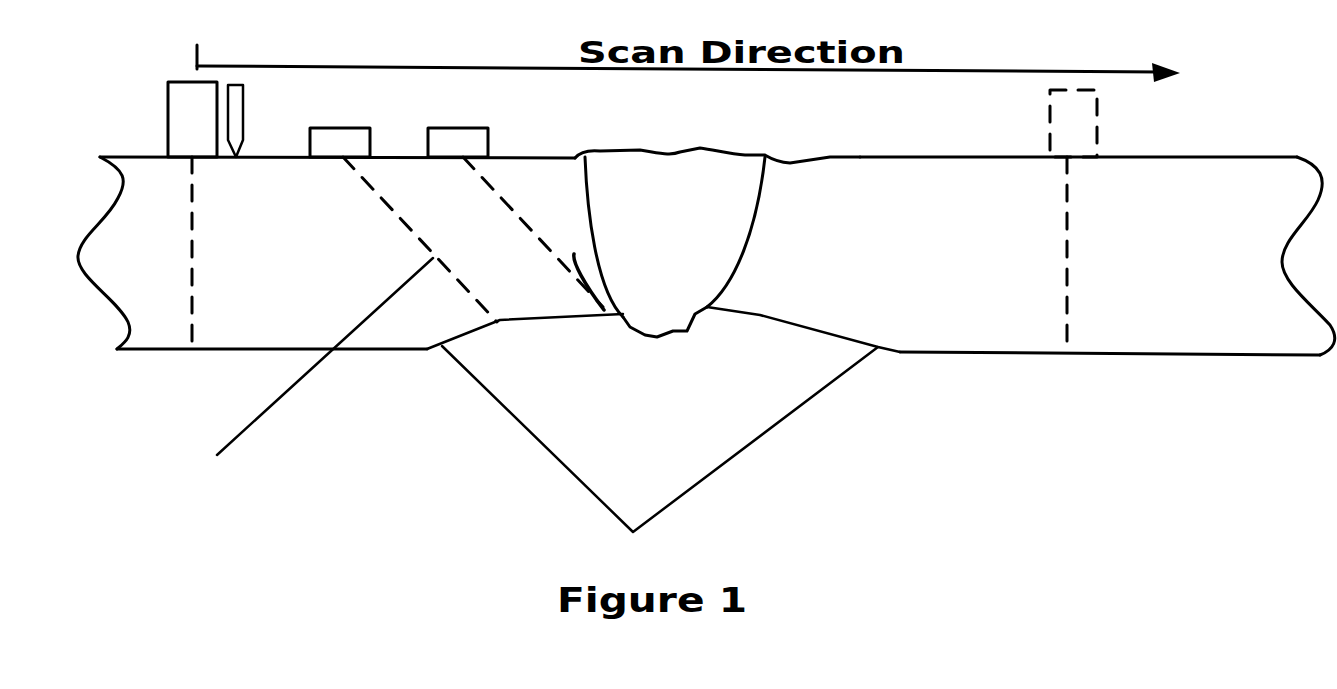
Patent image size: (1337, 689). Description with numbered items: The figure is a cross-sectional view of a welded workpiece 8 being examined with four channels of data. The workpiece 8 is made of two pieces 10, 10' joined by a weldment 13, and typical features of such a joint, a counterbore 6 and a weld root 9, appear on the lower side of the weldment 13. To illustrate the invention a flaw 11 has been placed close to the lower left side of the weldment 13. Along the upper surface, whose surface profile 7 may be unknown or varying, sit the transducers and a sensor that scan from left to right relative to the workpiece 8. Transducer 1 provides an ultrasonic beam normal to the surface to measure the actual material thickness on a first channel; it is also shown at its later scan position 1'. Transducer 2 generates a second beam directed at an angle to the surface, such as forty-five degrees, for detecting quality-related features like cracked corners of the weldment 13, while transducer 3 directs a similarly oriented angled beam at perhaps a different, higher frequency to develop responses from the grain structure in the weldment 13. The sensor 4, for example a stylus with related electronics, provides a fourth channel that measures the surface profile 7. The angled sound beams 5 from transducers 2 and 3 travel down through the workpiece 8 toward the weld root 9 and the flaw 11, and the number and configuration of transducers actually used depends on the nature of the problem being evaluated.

The transducer 1 is at (192, 215).
The transducer at end scan position 1' is at (1073, 221).
The transducer 2 is at (340, 145).
The transducer 3 is at (458, 145).
The sensor 4 is at (249, 121).
The sound beams 5 is at (190, 247).
The counterbore 6 is at (637, 532).
The surface profile 7 is at (127, 152).
The workpiece 8 is at (1170, 130).
The weld root 9 is at (627, 322).
The piece 10 is at (241, 396).
The piece 10' is at (1110, 405).
The flaw 11 is at (581, 244).
The weldment 13 is at (703, 152).